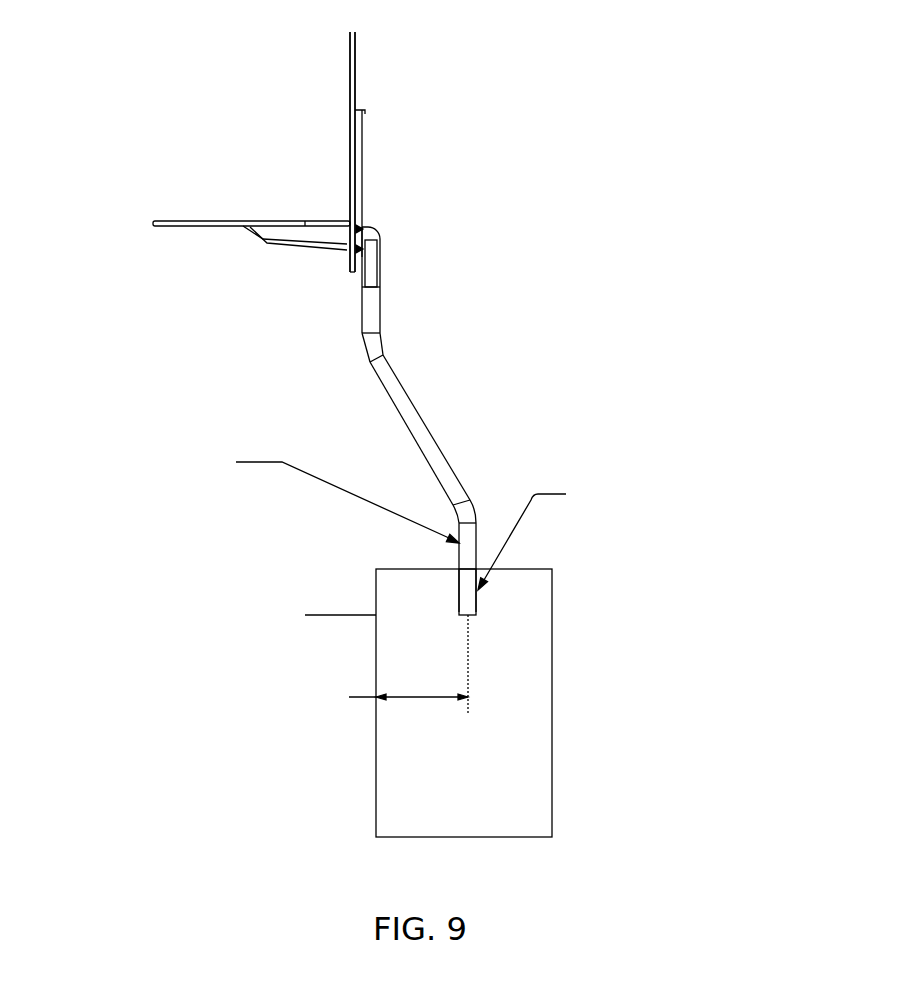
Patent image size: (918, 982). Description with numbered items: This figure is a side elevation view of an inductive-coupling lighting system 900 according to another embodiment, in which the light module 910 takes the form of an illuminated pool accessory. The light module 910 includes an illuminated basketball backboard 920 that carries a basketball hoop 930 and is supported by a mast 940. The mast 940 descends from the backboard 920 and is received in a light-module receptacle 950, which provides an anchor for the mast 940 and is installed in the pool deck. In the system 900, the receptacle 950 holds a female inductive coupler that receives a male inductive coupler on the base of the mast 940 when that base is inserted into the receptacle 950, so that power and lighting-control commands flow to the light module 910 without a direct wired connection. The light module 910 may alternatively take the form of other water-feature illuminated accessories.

The inductive-coupling lighting system 900 is at (736, 142).
The light module 910 is at (408, 100).
The illuminated basketball backboard 920 is at (350, 51).
The basketball hoop 930 is at (168, 220).
The mast 940 is at (418, 432).
The light-module receptacle 950 is at (580, 625).